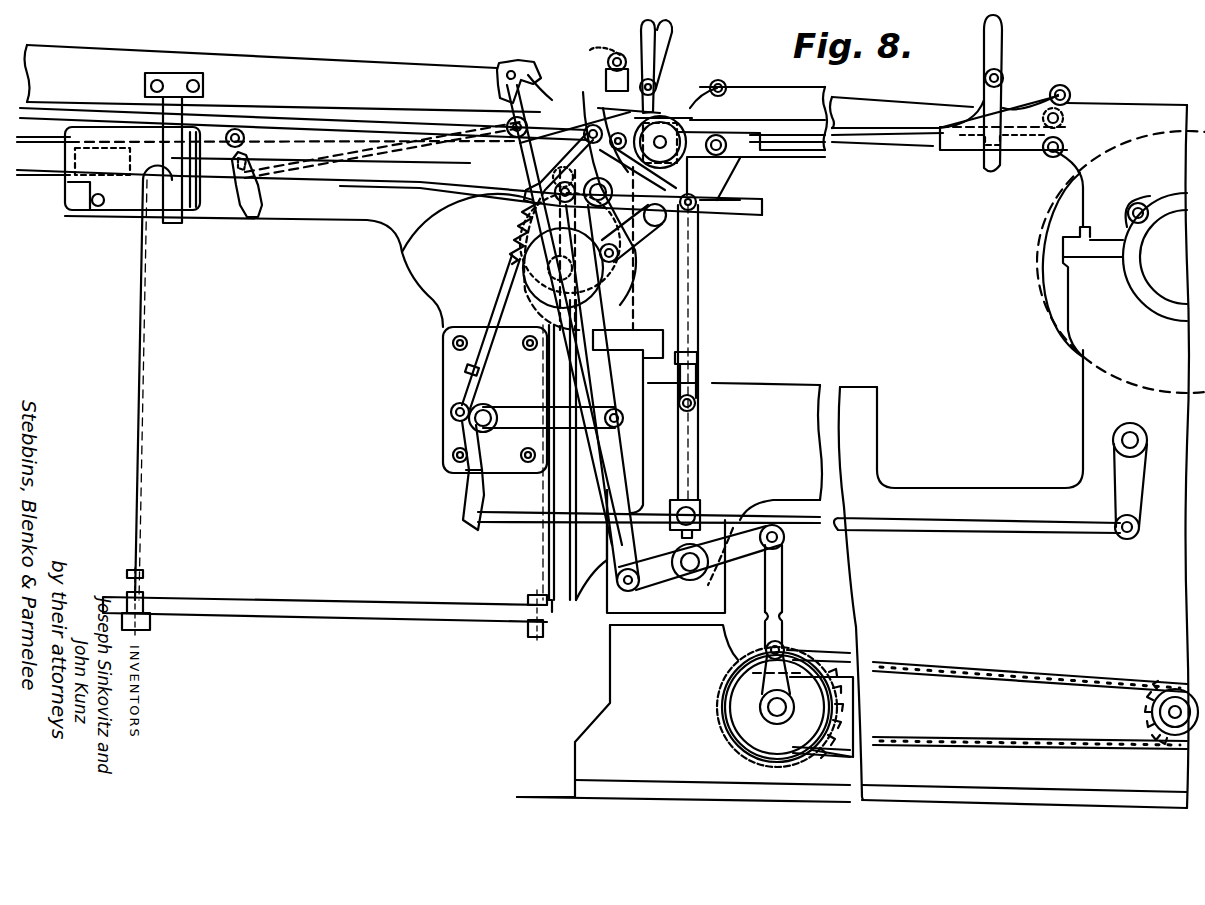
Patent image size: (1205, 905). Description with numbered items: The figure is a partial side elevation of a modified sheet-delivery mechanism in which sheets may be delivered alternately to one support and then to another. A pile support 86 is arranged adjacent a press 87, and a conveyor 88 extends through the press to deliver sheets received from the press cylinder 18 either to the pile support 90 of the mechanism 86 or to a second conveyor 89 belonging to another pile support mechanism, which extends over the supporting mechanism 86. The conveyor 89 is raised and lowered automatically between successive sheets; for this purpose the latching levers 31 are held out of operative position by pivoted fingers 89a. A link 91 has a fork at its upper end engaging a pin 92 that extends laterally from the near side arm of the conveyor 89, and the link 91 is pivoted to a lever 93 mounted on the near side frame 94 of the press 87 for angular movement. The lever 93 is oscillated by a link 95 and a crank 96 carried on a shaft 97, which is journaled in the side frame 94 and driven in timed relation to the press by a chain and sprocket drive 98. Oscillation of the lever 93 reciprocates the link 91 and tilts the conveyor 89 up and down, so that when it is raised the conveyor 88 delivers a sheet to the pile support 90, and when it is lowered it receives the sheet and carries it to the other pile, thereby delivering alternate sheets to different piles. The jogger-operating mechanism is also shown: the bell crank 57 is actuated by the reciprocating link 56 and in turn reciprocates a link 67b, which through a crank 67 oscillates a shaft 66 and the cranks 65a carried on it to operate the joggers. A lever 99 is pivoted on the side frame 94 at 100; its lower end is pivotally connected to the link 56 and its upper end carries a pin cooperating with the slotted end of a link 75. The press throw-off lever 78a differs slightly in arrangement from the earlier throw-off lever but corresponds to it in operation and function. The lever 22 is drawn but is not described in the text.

The press cylinder 18 is at (1050, 258).
The vertical lever 22 is at (582, 492).
The latching lever 31 is at (662, 40).
The link 56 is at (968, 527).
The bell crank 57 is at (478, 435).
The crank 65a is at (622, 112).
The shaft 66 is at (593, 336).
The crank 67 is at (547, 116).
The link 67b is at (505, 287).
The link 75 is at (400, 186).
The press throw-off lever 78a is at (258, 198).
The pile support 86 is at (371, 301).
The press 87 is at (1058, 431).
The conveyor 88 is at (885, 104).
The conveyor 89 is at (311, 66).
The pivoted finger 89a is at (606, 66).
The pile support 90 is at (338, 610).
The link 91 is at (583, 371).
The pin 92 is at (499, 72).
The lever 93 is at (700, 569).
The side frame 94 is at (916, 495).
The link 95 is at (785, 575).
The crank 96 is at (793, 657).
The shaft 97 is at (778, 708).
The chain and sprocket drive 98 is at (1004, 676).
The lever 99 is at (699, 255).
The pivot 100 is at (706, 404).